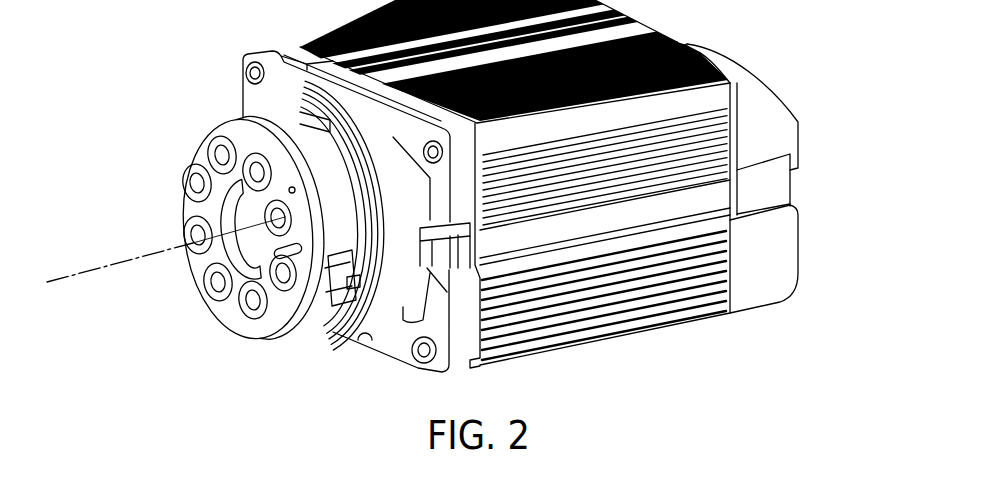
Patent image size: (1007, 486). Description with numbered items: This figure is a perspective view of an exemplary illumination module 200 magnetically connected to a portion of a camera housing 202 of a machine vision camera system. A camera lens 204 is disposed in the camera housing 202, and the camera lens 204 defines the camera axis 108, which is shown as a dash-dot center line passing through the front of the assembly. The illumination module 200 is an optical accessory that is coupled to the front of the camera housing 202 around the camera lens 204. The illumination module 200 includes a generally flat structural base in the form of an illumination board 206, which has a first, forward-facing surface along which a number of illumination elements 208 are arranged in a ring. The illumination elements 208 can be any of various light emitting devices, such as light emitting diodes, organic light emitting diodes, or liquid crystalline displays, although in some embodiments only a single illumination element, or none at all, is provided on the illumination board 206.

The illumination module 200 is at (172, 137).
The camera housing 202 is at (457, 350).
The camera lens 204 is at (340, 247).
The illumination board 206 is at (225, 120).
The illumination elements 208 is at (190, 190).
The camera axis 108 is at (100, 262).